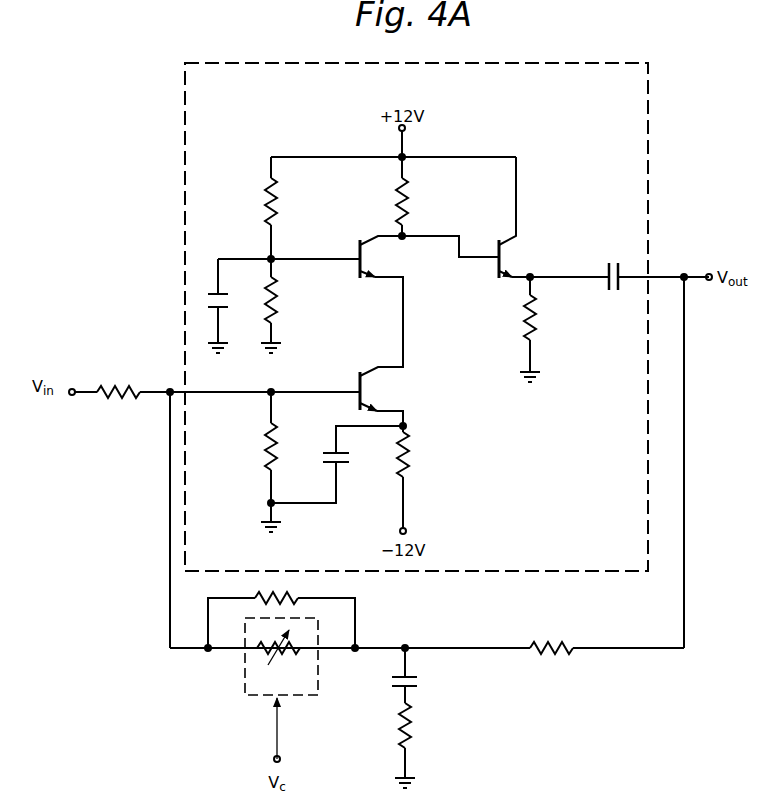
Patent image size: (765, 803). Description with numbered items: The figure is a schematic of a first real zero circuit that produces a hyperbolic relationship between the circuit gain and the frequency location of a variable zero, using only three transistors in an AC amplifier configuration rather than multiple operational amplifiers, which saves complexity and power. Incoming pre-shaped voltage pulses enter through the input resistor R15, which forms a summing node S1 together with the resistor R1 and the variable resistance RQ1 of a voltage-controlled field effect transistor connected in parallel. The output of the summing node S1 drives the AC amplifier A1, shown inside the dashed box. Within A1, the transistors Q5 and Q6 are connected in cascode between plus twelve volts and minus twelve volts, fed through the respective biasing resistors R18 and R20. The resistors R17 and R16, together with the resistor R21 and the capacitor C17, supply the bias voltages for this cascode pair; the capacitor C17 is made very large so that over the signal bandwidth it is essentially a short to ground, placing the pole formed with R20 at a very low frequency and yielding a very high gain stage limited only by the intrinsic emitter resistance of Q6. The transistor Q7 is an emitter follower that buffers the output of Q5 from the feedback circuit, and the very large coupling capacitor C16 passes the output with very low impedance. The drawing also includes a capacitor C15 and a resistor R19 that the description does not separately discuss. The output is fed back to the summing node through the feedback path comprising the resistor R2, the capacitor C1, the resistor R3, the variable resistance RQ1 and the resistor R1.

The AC amplifier A1 is at (648, 86).
The input resistor R15 is at (217, 404).
The summing node S1 is at (170, 390).
The biasing resistor R16 is at (287, 306).
The biasing resistor R17 is at (290, 208).
The biasing resistor R18 is at (418, 196).
The resistor R19 is at (545, 329).
The biasing resistor R20 is at (420, 477).
The biasing resistor R21 is at (257, 462).
The capacitor C15 is at (236, 306).
The coupling capacitor C16 is at (654, 265).
The capacitor C17 is at (337, 464).
The transistor Q5 is at (358, 306).
The transistor Q6 is at (383, 399).
The emitter follower transistor Q7 is at (554, 217).
The resistor R1 is at (281, 610).
The variable resistance RQ1 is at (281, 656).
The resistor R2 is at (551, 659).
The capacitor C1 is at (417, 675).
The resistor R3 is at (416, 745).